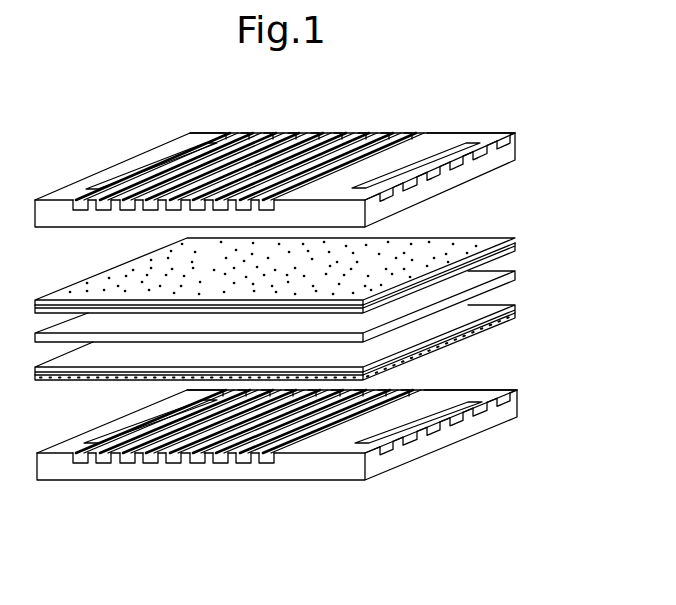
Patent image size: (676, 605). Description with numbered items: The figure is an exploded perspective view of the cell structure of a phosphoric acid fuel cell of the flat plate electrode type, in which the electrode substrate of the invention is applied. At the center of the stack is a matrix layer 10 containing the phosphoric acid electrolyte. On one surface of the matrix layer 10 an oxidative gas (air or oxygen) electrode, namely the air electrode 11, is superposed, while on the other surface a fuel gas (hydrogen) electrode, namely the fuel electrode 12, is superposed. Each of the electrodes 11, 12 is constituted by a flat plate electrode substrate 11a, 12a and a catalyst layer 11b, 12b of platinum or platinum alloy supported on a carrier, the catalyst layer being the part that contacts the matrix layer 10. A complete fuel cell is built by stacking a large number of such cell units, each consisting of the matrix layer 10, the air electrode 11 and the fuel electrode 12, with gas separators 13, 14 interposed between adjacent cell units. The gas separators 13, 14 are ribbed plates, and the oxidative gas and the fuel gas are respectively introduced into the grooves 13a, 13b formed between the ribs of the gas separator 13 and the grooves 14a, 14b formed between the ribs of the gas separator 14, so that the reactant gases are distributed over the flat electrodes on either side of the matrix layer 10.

The matrix layer 10 is at (445, 293).
The air electrode 11 is at (332, 260).
The electrode substrate 11a is at (470, 236).
The catalyst layer 11b is at (453, 275).
The fuel electrode 12 is at (328, 342).
The electrode substrate 12a is at (467, 337).
The catalyst layer 12b is at (465, 315).
The gas separator 13 is at (308, 147).
The grooves 13a is at (477, 176).
The grooves 13b is at (408, 133).
The gas separator 14 is at (312, 413).
The grooves 14a is at (423, 391).
The grooves 14b is at (455, 434).